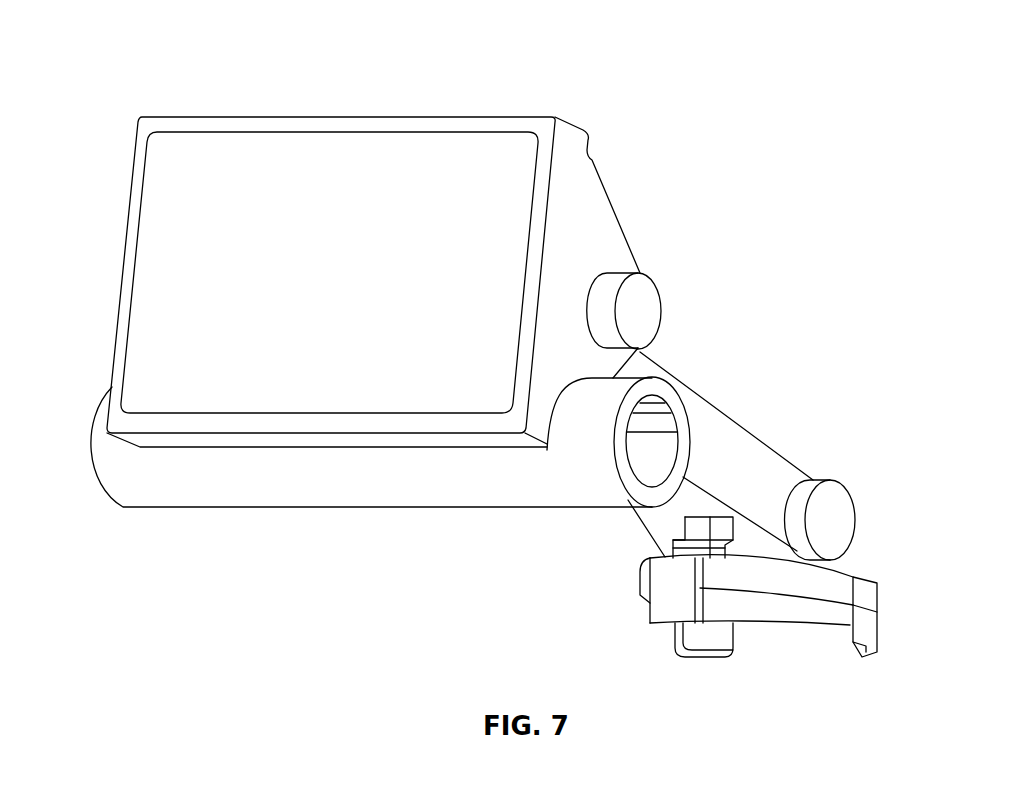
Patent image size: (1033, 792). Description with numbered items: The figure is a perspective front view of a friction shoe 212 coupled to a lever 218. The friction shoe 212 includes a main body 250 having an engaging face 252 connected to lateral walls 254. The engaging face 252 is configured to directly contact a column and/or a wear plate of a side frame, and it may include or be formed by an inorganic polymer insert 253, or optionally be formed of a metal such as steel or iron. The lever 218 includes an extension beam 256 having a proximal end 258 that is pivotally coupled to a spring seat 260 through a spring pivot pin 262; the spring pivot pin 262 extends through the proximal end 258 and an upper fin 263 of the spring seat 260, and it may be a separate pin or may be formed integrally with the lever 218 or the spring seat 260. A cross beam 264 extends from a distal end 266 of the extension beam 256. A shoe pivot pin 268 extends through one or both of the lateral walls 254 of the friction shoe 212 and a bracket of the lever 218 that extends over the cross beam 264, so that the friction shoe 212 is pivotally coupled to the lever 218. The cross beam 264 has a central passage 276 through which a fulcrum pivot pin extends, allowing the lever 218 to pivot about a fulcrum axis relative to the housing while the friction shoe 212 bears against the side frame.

The friction shoe 212 is at (108, 250).
The lever 218 is at (735, 412).
The main body 250 is at (590, 168).
The engaging face 252 is at (280, 227).
The inorganic polymer insert 253 is at (420, 212).
The lateral walls 254 is at (130, 173).
The extension beam 256 is at (763, 443).
The proximal end 258 is at (780, 474).
The spring seat 260 is at (840, 590).
The spring pivot pin 262 is at (837, 523).
The upper fin 263 is at (707, 533).
The cross beam 264 is at (502, 482).
The distal end 266 is at (656, 375).
The shoe pivot pin 268 is at (642, 307).
The central passage 276 is at (645, 450).